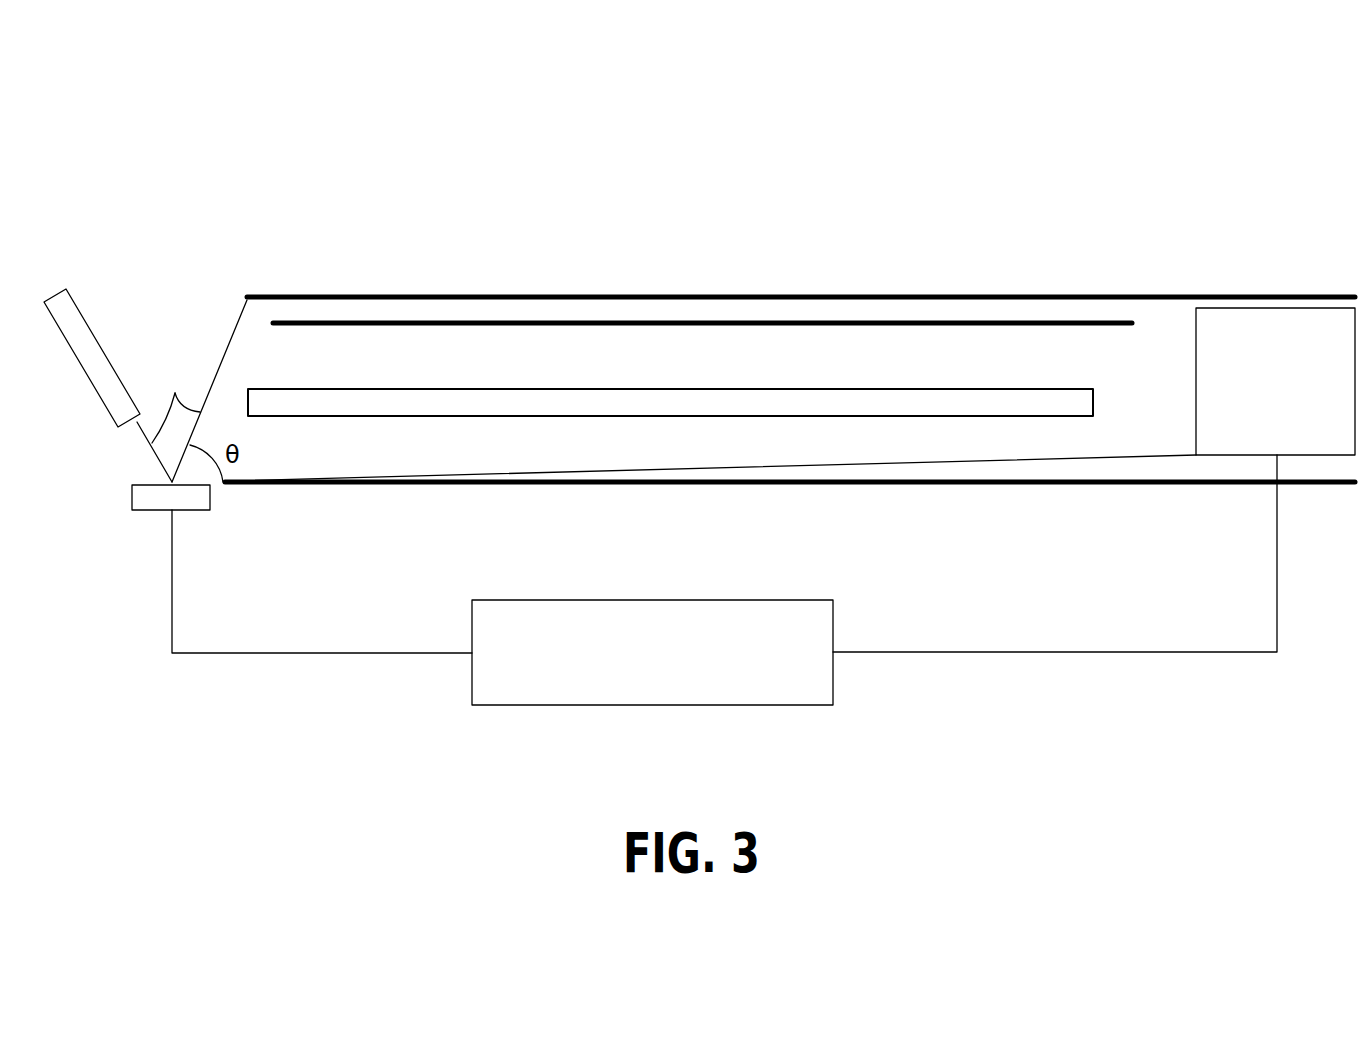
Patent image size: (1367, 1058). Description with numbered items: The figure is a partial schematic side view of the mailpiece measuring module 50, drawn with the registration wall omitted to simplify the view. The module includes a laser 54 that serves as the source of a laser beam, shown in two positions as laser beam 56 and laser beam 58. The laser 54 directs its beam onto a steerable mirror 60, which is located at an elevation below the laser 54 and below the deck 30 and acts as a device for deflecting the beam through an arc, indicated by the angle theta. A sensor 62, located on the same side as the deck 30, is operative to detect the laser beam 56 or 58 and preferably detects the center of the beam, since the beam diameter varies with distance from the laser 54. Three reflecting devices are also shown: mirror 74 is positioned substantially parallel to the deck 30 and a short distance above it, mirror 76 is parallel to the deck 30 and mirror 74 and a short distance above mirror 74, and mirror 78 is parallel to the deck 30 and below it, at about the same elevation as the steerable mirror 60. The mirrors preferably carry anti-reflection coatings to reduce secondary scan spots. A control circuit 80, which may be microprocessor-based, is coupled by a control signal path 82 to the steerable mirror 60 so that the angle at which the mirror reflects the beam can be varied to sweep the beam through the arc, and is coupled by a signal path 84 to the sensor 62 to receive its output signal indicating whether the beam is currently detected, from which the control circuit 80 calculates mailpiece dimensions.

The deck 30 is at (412, 417).
The mailpiece measuring module 50 is at (1172, 230).
The laser 54 is at (75, 355).
The laser beam 56 is at (175, 393).
The laser beam 58 is at (657, 472).
The steerable mirror 60 is at (197, 510).
The sensor 62 is at (1252, 340).
The mirror 74 is at (1053, 322).
The mirror 76 is at (805, 295).
The mirror 78 is at (1065, 485).
The control circuit 80 is at (633, 705).
The control signal path 82 is at (377, 653).
The signal path 84 is at (1132, 652).